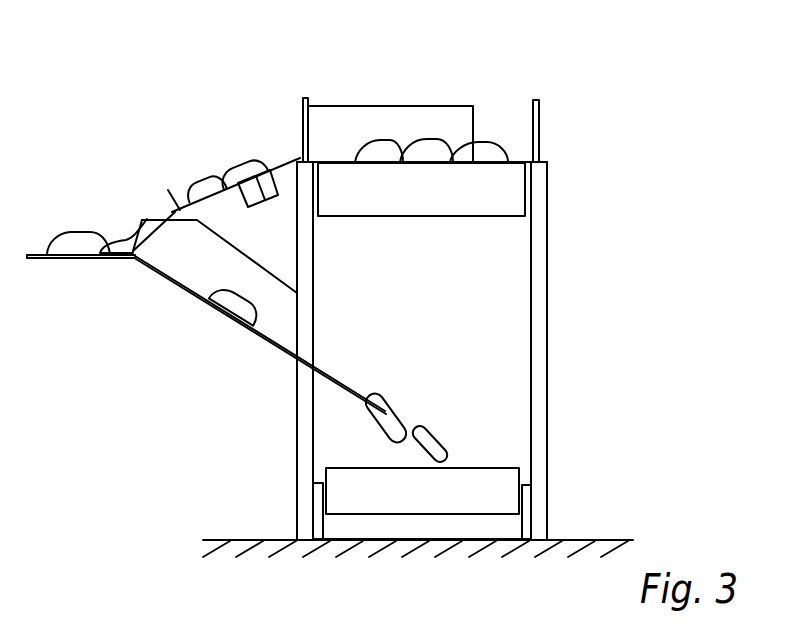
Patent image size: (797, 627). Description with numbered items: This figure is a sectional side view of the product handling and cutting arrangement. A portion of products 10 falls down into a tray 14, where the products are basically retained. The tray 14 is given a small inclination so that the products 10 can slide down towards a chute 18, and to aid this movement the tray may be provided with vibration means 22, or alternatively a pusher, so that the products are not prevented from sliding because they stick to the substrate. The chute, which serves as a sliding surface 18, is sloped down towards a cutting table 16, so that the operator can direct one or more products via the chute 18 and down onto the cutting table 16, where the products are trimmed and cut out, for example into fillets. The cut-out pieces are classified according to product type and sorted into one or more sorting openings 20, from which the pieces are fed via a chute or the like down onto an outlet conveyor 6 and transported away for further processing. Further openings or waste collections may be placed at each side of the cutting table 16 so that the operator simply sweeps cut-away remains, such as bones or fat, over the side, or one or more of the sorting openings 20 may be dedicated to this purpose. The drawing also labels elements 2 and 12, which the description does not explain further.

The collecting container / bin 2 is at (513, 187).
The outlet conveyor 6 is at (475, 473).
The products 10 is at (82, 242).
The guard panel and posts 12 is at (378, 120).
The tray 14 is at (213, 193).
The cutting table 16 is at (83, 262).
The chute 18 is at (163, 222).
The sorting openings 20 is at (182, 262).
The vibration means 22 is at (277, 170).